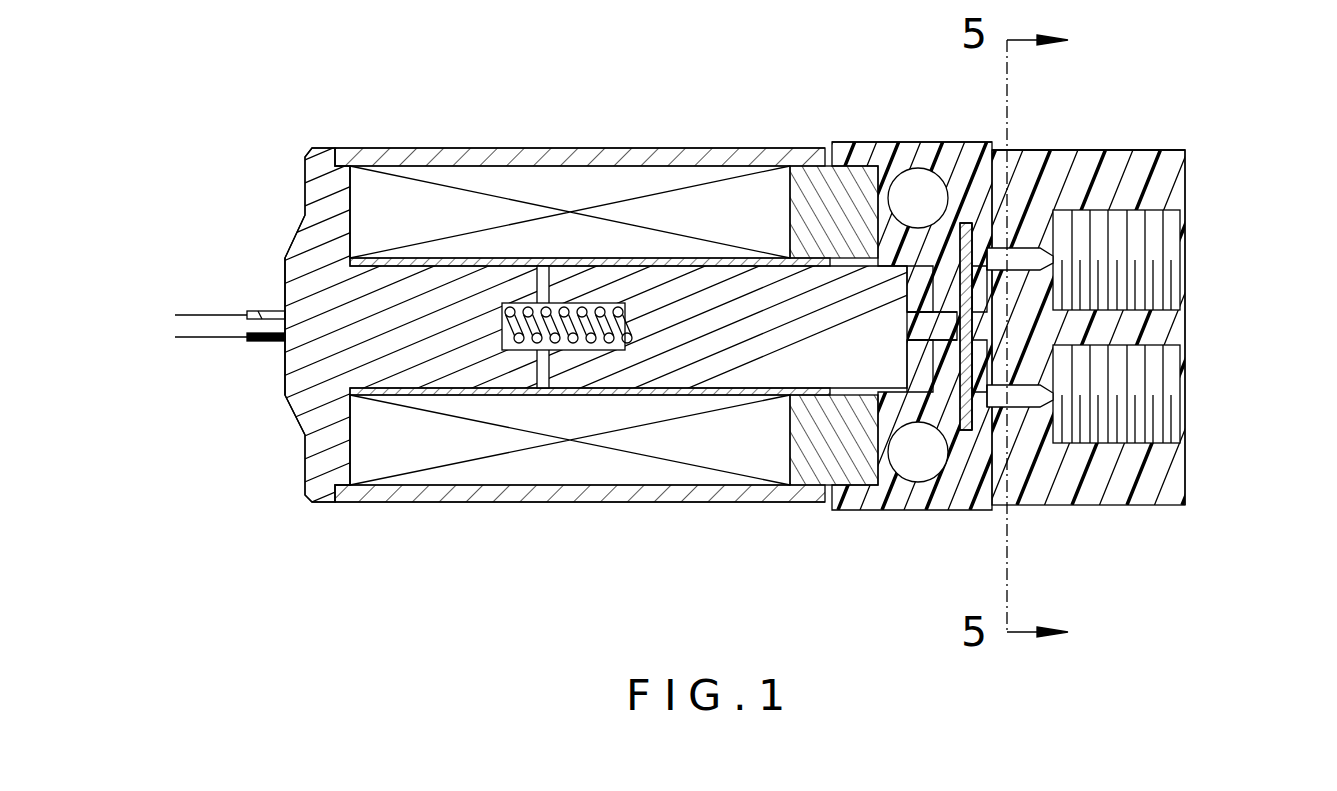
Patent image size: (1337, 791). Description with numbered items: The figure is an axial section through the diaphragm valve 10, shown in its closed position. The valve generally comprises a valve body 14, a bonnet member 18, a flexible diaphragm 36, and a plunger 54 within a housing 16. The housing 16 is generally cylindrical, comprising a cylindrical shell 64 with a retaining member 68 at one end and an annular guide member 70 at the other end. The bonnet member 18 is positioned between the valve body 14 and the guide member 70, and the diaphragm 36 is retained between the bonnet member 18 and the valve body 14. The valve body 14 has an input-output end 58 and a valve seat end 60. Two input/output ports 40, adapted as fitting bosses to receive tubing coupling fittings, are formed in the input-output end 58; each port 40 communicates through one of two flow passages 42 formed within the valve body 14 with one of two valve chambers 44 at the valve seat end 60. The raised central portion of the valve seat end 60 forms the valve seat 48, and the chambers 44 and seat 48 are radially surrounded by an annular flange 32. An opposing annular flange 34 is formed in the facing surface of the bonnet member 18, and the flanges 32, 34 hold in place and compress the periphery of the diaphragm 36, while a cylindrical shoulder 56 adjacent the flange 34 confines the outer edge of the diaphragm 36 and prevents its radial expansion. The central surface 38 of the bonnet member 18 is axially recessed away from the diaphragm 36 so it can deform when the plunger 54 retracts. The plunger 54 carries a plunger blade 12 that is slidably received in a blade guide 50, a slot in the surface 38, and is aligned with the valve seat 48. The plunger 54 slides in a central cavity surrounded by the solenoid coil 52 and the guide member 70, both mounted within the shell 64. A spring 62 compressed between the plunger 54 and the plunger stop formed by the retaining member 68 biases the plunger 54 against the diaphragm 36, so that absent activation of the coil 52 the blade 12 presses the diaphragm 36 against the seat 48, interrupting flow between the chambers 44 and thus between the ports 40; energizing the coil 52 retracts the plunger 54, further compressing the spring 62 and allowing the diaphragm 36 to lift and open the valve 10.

The diaphragm valve 10 is at (596, 118).
The plunger blade 12 is at (878, 170).
The valve body 14 is at (1135, 506).
The housing 16 is at (548, 497).
The bonnet member 18 is at (872, 516).
The annular flange 32 is at (952, 433).
The opposing annular flange 34 is at (912, 420).
The flexible diaphragm 36 is at (1000, 215).
The surface of the bonnet member 38 is at (915, 310).
The input/output port 40 is at (1160, 278).
The flow passage 42 is at (1005, 445).
The valve chamber 44 is at (1020, 250).
The valve seat 48 is at (1065, 190).
The blade guide 50 is at (885, 472).
The solenoid coil 52 is at (650, 441).
The plunger 54 is at (745, 366).
The cylindrical shoulder 56 is at (990, 215).
The input-output end 58 is at (1185, 165).
The valve seat end 60 is at (974, 222).
The spring 62 is at (520, 340).
The cylindrical shell 64 is at (402, 497).
The retaining member 68 is at (315, 197).
The annular guide member 70 is at (812, 177).